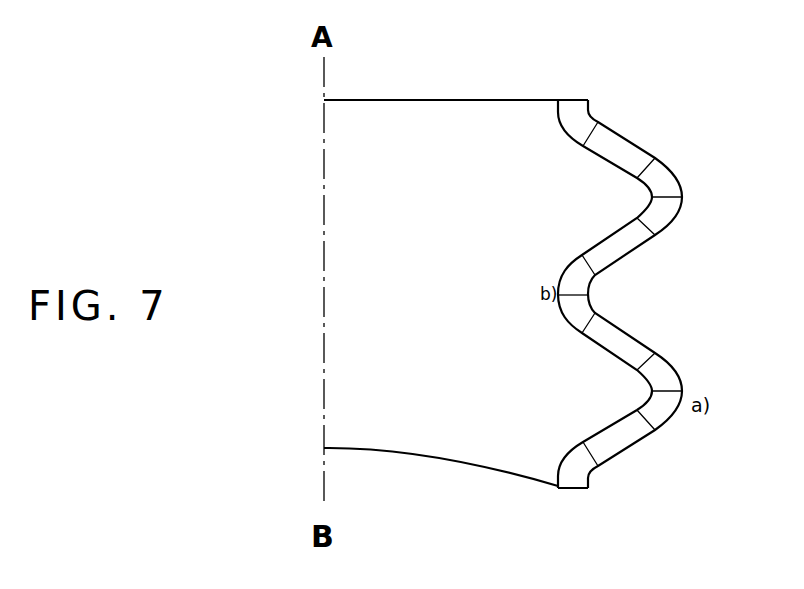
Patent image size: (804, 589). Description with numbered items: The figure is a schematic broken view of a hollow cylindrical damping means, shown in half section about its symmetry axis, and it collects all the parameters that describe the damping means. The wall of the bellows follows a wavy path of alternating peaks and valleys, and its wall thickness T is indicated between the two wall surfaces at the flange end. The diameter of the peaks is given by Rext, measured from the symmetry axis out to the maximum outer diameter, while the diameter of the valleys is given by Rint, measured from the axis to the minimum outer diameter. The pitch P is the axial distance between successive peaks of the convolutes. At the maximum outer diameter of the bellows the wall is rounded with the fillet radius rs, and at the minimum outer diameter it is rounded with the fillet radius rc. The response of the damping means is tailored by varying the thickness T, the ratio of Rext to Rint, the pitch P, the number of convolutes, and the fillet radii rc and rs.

The diameter of the peak Rext is at (676, 72).
The diameter of the valley Rint is at (585, 377).
The pitch P is at (690, 197).
The fillet radius at maximum outer diameter of bellows rs is at (683, 211).
The fillet radius at minimum outer diameter of bellows rc is at (589, 295).
The thickness T is at (588, 495).